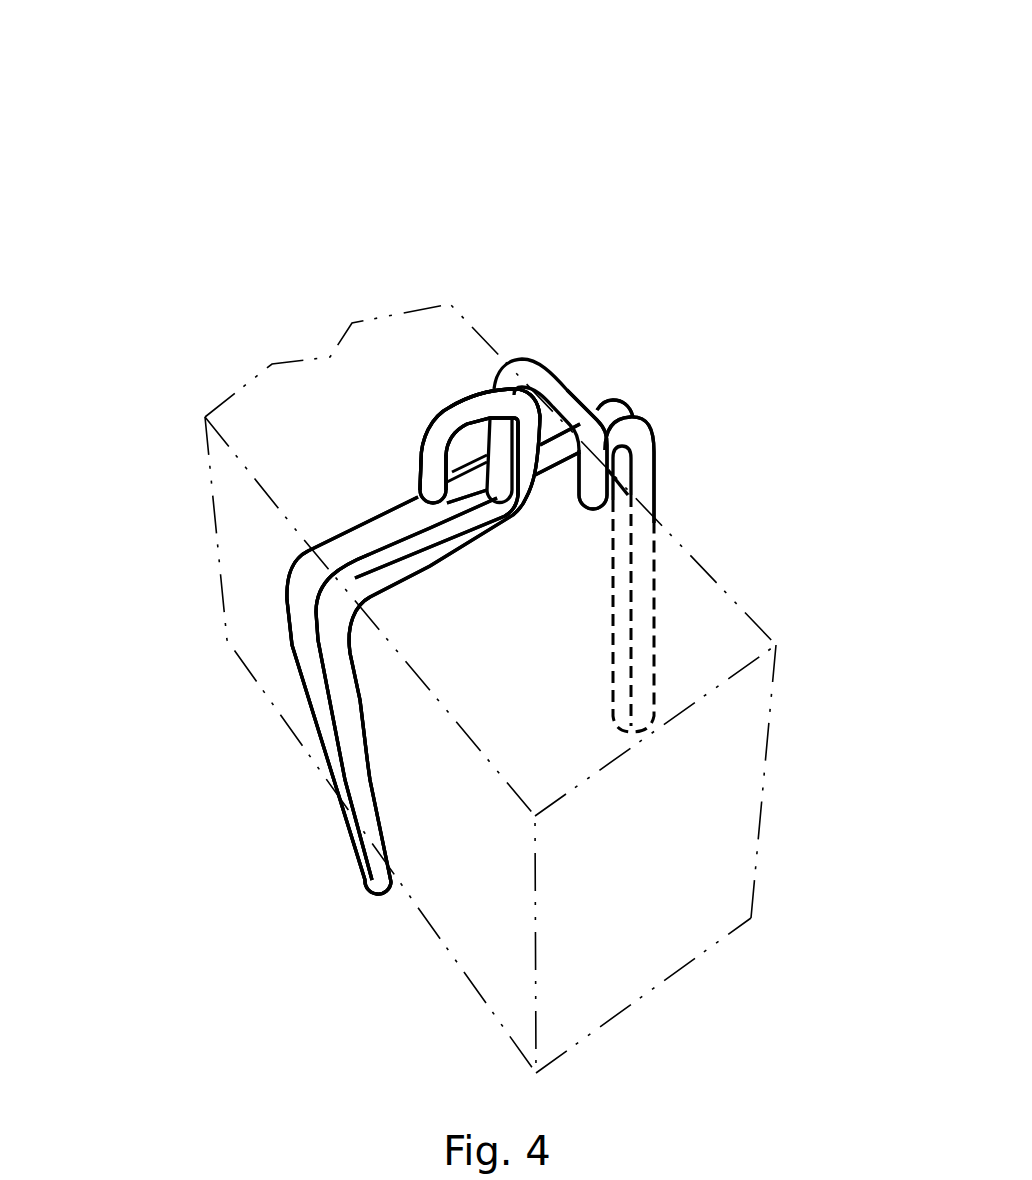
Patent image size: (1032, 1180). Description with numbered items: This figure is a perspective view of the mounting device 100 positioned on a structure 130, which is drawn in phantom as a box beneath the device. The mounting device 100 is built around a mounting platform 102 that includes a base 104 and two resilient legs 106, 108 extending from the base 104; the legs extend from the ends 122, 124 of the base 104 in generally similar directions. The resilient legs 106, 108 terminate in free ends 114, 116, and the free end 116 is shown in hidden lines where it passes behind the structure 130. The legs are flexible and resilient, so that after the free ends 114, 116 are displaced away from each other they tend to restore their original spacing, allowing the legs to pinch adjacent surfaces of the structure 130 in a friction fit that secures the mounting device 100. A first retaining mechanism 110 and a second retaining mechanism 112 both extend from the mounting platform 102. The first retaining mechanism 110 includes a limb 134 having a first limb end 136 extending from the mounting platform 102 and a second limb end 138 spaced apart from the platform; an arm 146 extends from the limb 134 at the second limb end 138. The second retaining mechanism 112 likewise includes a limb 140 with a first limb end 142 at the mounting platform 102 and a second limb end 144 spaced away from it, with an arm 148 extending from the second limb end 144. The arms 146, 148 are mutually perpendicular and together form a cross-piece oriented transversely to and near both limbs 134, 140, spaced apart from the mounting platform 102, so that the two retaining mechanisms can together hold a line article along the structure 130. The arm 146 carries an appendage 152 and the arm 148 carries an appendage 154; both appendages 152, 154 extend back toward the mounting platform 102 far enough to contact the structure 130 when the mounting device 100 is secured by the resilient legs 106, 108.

The mounting device 100 is at (616, 120).
The mounting platform 102 is at (362, 503).
The base 104 is at (337, 542).
The resilient leg 106 is at (303, 707).
The resilient leg 108 is at (667, 480).
The first retaining mechanism 110 is at (463, 393).
The second retaining mechanism 112 is at (592, 372).
The free end 114 is at (370, 905).
The free end 116 is at (658, 700).
The end 122 is at (275, 605).
The end 124 is at (640, 392).
The structure 130 is at (626, 866).
The limb 134 is at (530, 490).
The first limb end 136 is at (523, 527).
The second limb end 138 is at (518, 405).
The limb 140 is at (428, 458).
The first limb end 142 is at (518, 407).
The second limb end 144 is at (567, 383).
The arm 146 is at (447, 440).
The arm 148 is at (592, 370).
The appendage 152 is at (417, 465).
The appendage 154 is at (592, 472).